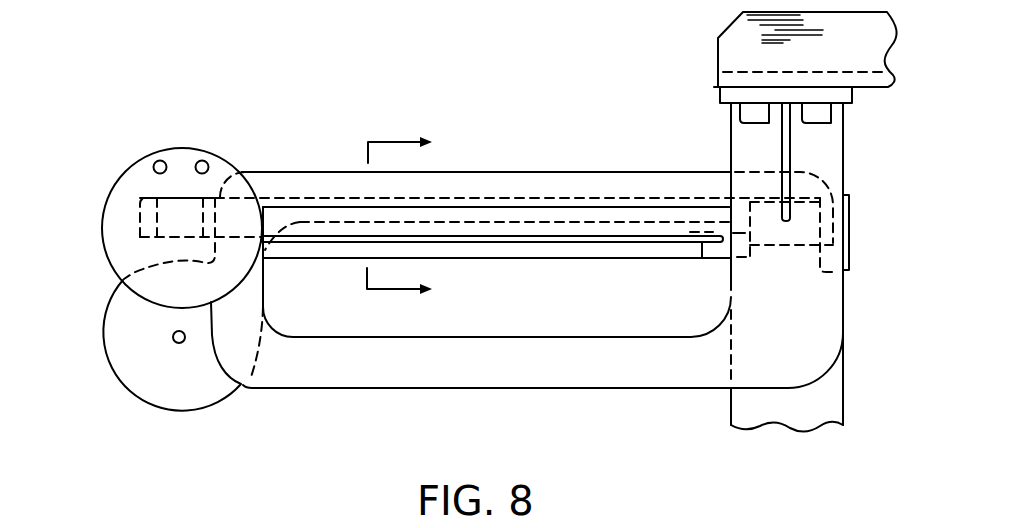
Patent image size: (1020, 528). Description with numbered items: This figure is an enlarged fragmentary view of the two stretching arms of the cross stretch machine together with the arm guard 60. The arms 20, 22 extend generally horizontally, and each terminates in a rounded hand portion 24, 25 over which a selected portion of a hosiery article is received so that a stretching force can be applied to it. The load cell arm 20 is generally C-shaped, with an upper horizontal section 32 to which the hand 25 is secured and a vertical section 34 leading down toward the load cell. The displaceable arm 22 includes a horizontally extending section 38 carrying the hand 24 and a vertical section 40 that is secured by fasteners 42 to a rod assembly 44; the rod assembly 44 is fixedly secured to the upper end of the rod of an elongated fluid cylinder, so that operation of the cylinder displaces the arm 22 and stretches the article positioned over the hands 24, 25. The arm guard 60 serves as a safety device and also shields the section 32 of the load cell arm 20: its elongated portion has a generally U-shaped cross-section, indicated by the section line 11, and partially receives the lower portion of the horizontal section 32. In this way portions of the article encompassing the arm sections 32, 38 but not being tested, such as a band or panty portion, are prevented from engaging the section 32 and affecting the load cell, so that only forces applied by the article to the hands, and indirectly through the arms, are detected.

The section line 11- 11 is at (420, 217).
The arm 20 is at (522, 162).
The arm 22 is at (521, 400).
The rounded hand portion 24 is at (112, 200).
The rounded hand portion 25 is at (115, 346).
The upper horizontal section 32 is at (297, 185).
The vertical section 34 is at (835, 399).
The horizontally extending section 38 is at (402, 372).
The vertical section 40 is at (818, 297).
The fasteners 42 is at (762, 117).
The rod assembly 44 is at (737, 42).
The arm guard 60 is at (551, 268).